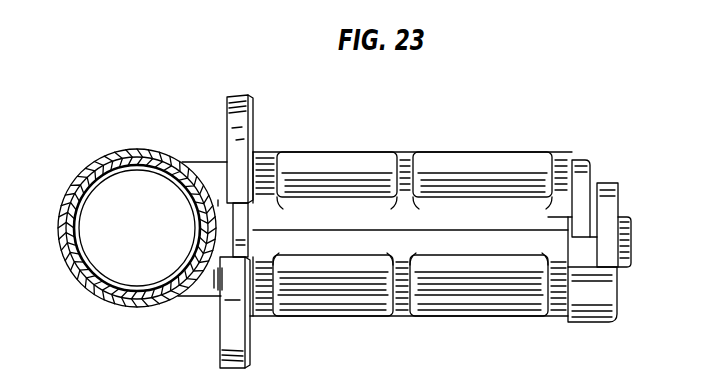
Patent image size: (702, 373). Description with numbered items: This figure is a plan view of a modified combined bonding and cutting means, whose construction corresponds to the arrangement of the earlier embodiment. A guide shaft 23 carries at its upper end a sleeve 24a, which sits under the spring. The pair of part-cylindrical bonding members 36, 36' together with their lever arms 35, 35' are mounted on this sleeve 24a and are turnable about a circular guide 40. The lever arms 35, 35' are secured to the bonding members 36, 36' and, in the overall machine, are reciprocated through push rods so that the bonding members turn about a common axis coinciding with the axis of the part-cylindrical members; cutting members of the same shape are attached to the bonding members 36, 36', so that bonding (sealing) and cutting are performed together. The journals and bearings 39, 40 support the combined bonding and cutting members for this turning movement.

The guide shaft 23 is at (80, 205).
The sleeve 24a is at (124, 156).
The circular guide 40 is at (236, 215).
The lever arm 35' is at (263, 149).
The lever arm 35 is at (255, 312).
The bonding member 36 is at (592, 269).
The bonding member 36' is at (562, 182).
The journal and bearing 39 is at (617, 190).